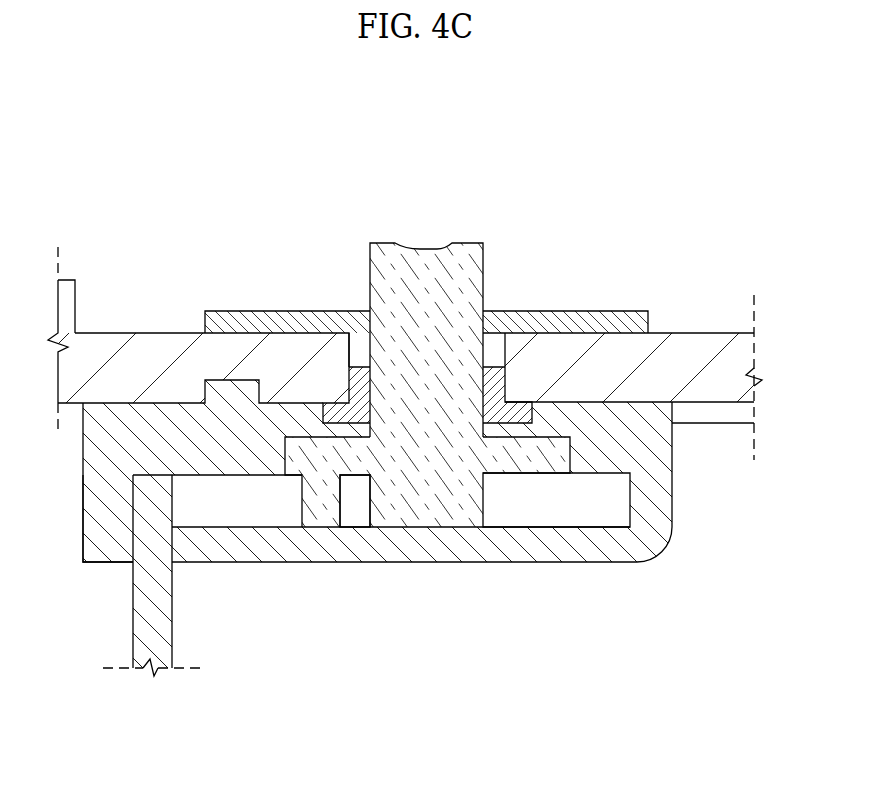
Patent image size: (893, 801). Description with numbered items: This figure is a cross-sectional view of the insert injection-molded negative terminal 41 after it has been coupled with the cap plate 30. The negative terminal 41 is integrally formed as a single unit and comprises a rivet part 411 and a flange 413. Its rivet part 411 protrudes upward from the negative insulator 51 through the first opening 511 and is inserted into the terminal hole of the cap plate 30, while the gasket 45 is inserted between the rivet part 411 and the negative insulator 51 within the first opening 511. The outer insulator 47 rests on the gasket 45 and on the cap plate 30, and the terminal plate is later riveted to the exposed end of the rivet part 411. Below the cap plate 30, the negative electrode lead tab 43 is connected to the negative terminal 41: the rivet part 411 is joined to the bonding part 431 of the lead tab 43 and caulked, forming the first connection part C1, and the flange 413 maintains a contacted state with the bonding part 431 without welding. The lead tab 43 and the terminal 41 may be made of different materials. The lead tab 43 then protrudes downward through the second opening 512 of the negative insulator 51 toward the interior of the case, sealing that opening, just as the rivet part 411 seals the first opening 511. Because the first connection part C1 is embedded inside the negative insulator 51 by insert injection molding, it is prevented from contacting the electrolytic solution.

The cap plate 30 is at (694, 340).
The negative terminal 41 is at (427, 397).
The rivet part 411 is at (470, 266).
The flange 413 is at (530, 465).
The negative electrode lead tab 43 is at (168, 613).
The bonding part 431 is at (583, 517).
The gasket 45 is at (353, 388).
The outer insulator 47 is at (250, 318).
The negative insulator 51 is at (153, 422).
The first opening 511 is at (486, 428).
The second opening 512 is at (135, 543).
The first connection part C1 is at (370, 528).